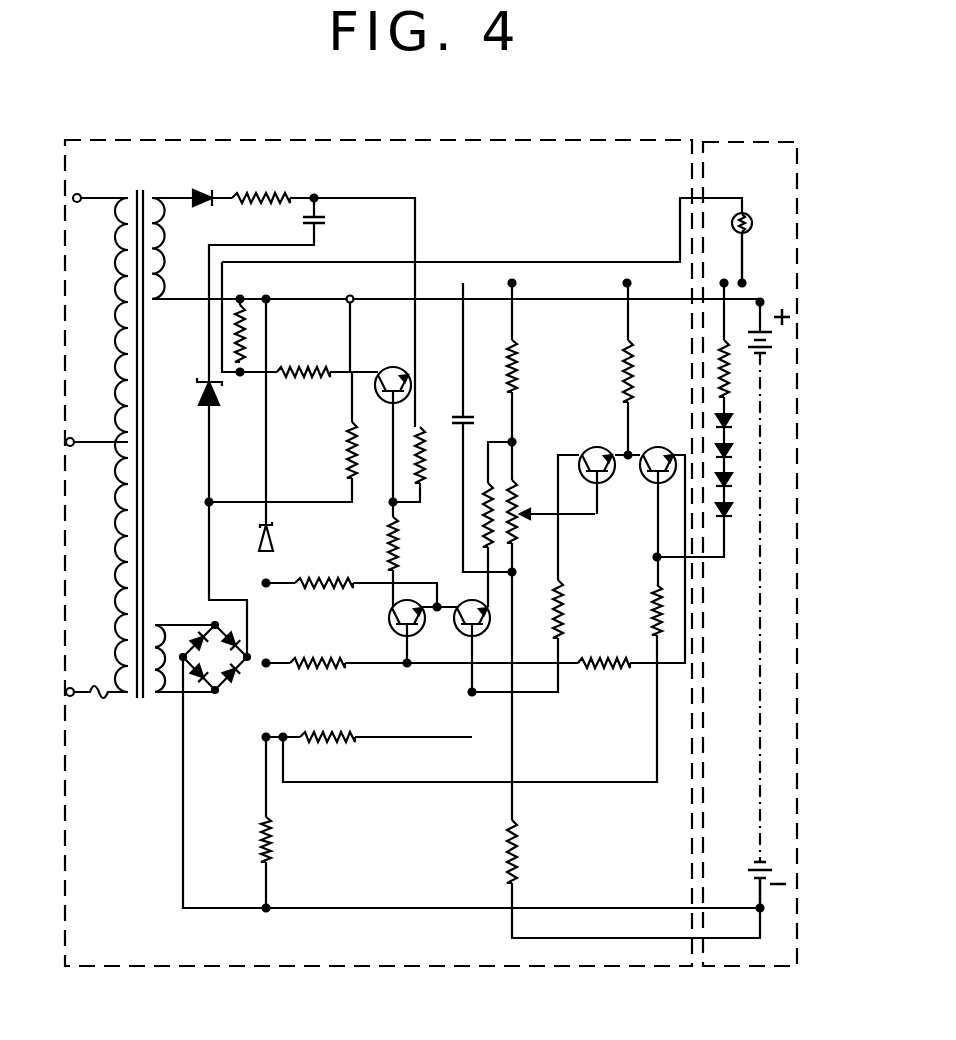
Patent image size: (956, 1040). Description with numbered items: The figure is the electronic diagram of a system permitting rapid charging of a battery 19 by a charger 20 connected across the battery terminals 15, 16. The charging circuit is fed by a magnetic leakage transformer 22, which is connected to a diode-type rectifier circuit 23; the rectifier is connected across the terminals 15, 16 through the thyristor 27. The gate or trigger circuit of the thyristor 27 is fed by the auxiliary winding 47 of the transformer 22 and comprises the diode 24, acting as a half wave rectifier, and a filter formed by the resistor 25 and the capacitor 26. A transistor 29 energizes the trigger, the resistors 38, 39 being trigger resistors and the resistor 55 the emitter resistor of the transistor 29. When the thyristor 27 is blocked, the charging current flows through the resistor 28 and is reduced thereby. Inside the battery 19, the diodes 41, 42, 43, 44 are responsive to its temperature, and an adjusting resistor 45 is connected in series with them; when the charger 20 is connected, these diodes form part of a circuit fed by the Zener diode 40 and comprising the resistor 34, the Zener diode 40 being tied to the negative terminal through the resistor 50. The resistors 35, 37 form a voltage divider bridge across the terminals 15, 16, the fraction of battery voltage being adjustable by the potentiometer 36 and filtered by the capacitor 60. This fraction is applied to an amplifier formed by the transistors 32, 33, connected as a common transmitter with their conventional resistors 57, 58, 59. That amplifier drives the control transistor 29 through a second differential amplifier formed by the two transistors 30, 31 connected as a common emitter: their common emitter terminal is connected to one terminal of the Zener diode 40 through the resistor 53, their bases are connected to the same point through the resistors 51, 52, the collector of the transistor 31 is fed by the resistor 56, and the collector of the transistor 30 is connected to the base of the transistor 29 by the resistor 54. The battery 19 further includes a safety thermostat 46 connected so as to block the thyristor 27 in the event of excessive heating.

The battery terminal 15 is at (762, 300).
The battery terminal 16 is at (762, 906).
The battery 19 is at (756, 142).
The charger 20 is at (390, 966).
The magnetic leakage transformer 22 is at (123, 323).
The diode-type rectifier circuit 23 is at (228, 690).
The diode 24 is at (205, 190).
The resistor 25 is at (262, 194).
The capacitor 26 is at (326, 222).
The thyristor 27 is at (197, 385).
The resistor 28 is at (348, 456).
The transistor 29 is at (396, 367).
The transistor 30 is at (391, 625).
The transistor 31 is at (458, 620).
The transistor 32 is at (603, 447).
The transistor 33 is at (650, 480).
The resistor 34 is at (654, 613).
The resistor 35 is at (516, 366).
The potentiometer 36 is at (518, 500).
The resistor 37 is at (516, 830).
The trigger resistor 38 is at (249, 364).
The trigger resistor 39 is at (318, 368).
The Zener diode 40 is at (272, 545).
The diode 41 is at (732, 420).
The diode 42 is at (732, 450).
The diode 43 is at (732, 478).
The diode 44 is at (732, 508).
The adjusting resistor 45 is at (728, 372).
The safety thermostat 46 is at (749, 216).
The auxiliary winding 47 is at (160, 252).
The resistor 50 is at (270, 830).
The resistor 51 is at (345, 735).
The resistor 52 is at (330, 659).
The resistor 53 is at (330, 580).
The resistor 54 is at (398, 552).
The emitter resistor 55 is at (422, 480).
The resistor 56 is at (486, 480).
The resistor 57 is at (562, 600).
The resistor 58 is at (612, 666).
The resistor 59 is at (632, 372).
The capacitor 60 is at (461, 414).